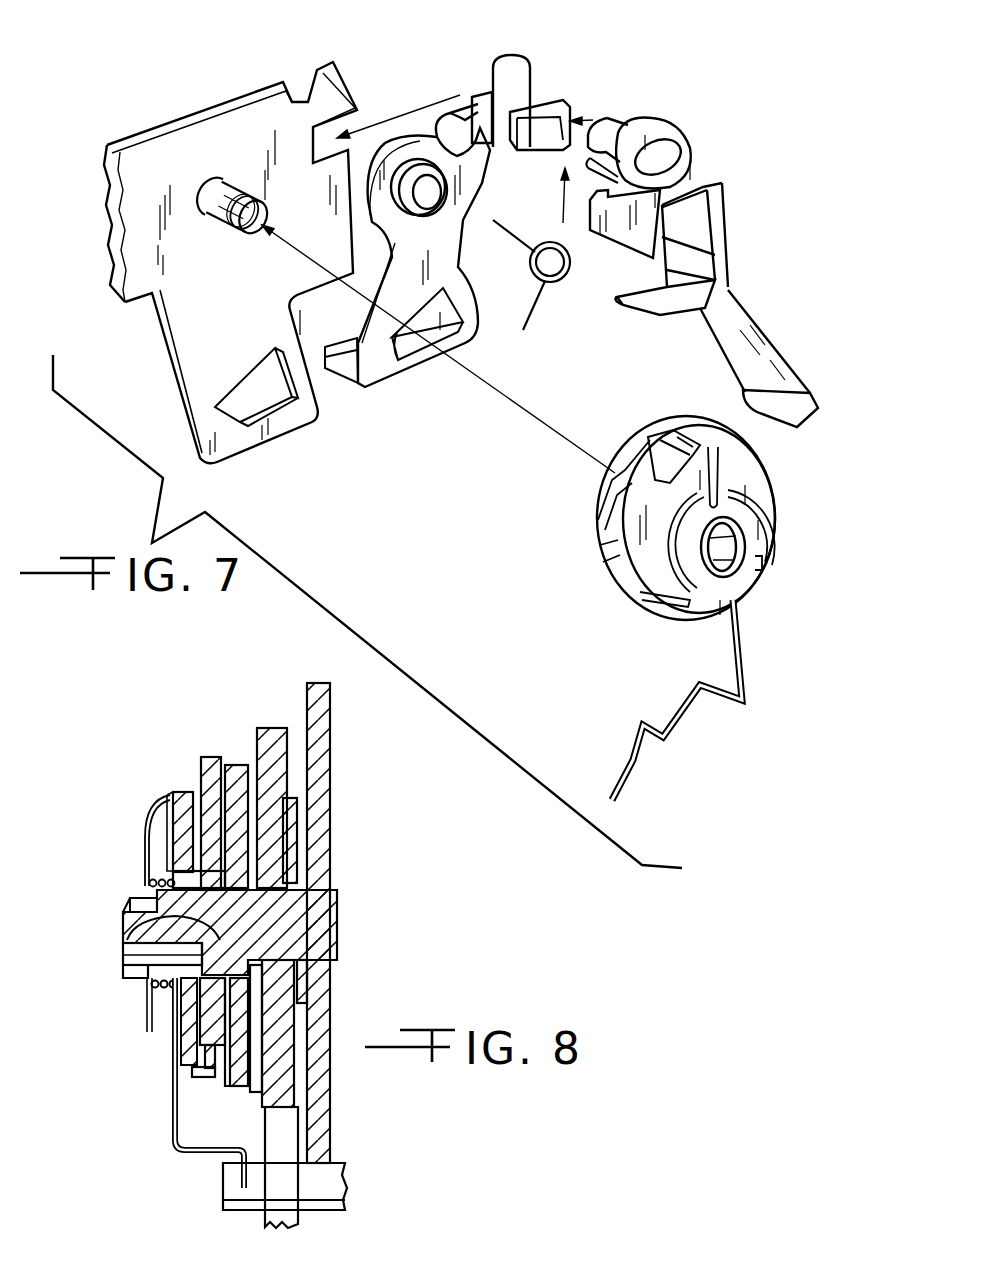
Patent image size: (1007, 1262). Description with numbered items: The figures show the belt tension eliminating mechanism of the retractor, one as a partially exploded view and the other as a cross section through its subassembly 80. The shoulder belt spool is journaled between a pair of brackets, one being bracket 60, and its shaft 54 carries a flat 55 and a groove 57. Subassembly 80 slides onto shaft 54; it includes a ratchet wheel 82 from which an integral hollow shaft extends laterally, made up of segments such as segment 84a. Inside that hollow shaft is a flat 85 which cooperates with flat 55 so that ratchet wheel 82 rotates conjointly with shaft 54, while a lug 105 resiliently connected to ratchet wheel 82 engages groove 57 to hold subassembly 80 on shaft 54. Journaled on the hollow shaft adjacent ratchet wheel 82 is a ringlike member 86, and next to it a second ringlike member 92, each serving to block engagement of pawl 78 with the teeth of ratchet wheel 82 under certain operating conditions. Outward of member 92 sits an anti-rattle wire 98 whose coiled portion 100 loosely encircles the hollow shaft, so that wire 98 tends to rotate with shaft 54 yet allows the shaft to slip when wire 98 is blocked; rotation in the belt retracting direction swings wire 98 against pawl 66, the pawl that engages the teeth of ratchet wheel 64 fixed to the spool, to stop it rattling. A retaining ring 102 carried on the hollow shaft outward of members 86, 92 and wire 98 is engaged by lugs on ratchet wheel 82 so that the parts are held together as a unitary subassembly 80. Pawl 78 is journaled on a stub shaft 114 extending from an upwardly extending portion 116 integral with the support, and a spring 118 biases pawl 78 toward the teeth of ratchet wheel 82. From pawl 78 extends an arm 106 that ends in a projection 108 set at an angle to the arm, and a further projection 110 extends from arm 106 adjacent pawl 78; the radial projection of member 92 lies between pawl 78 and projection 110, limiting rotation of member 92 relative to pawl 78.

In FIG. 7, the bracket 60 is at (222, 137).
In FIG. 8, the bracket 60 is at (277, 1130).
In FIG. 7, the shaft 54 is at (223, 187).
In FIG. 8, the shaft 54 is at (320, 915).
In FIG. 7, the flat 55 is at (256, 218).
In FIG. 7, the groove 57 is at (233, 229).
In FIG. 8, the groove 57 is at (127, 913).
In FIG. 7, the stub shaft 114 is at (530, 103).
In FIG. 7, the upwardly extending portion 116 is at (463, 192).
In FIG. 8, the upwardly extending portion 116 is at (303, 1123).
In FIG. 7, the pawl 78 is at (618, 220).
In FIG. 7, the arm 106 is at (737, 320).
In FIG. 7, the projection 108 is at (750, 405).
In FIG. 7, the projection 110 is at (645, 318).
In FIG. 7, the spring 118 is at (540, 308).
In FIG. 7, the subassembly 80 is at (585, 548).
In FIG. 8, the subassembly 80 is at (145, 795).
In FIG. 7, the anti-rattle member or wire 98 is at (680, 720).
In FIG. 8, the anti-rattle member or wire 98 is at (172, 1112).
In FIG. 8, the ringlike member 92 is at (177, 793).
In FIG. 8, the ringlike member 86 is at (210, 760).
In FIG. 8, the ratchet wheel 82 is at (235, 767).
In FIG. 8, the coiled portion 100 is at (163, 856).
In FIG. 8, the lug 105 is at (147, 903).
In FIG. 8, the flat 85 is at (127, 933).
In FIG. 8, the shaft segment 84a is at (163, 972).
In FIG. 8, the retaining ring 102 is at (147, 1032).
In FIG. 8, the pawl 66 is at (230, 1177).
In FIG. 8, the ratchet wheel 64 is at (320, 1003).